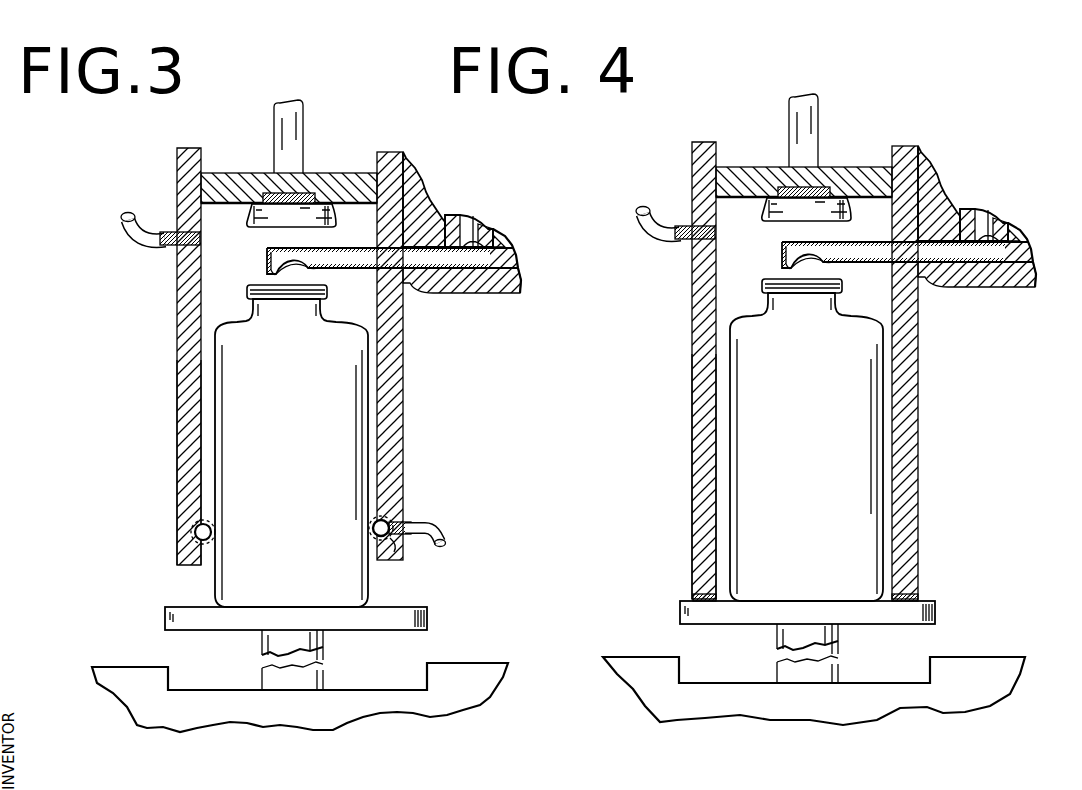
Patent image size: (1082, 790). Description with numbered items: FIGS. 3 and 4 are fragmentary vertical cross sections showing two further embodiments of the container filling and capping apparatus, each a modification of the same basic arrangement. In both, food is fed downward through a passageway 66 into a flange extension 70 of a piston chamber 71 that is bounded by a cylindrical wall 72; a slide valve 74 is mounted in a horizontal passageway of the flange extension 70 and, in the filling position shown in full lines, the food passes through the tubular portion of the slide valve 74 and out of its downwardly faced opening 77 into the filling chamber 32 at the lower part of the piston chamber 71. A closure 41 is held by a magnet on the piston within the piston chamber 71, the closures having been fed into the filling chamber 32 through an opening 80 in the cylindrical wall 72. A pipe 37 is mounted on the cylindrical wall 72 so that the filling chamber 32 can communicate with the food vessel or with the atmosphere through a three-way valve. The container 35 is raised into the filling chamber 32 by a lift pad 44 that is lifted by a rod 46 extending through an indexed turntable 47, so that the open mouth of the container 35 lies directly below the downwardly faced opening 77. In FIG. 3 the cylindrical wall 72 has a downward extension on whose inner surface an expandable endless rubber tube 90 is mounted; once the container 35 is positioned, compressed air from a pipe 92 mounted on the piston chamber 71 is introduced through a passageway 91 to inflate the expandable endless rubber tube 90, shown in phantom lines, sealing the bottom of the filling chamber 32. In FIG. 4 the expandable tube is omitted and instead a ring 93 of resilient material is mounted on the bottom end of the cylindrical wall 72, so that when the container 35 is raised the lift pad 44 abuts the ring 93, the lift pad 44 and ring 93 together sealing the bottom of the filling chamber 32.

In FIG. 3, the filling chamber 32 is at (291, 425).
In FIG. 4, the filling chamber 32 is at (806, 422).
In FIG. 3, the container 35 is at (403, 408).
In FIG. 4, the container 35 is at (931, 372).
In FIG. 3, the pipe 37 is at (128, 226).
In FIG. 4, the pipe 37 is at (669, 242).
In FIG. 3, the closure 41 is at (333, 210).
In FIG. 4, the closure 41 is at (824, 206).
In FIG. 3, the lift pad 44 is at (427, 613).
In FIG. 4, the lift pad 44 is at (833, 609).
In FIG. 3, the rod 46 is at (326, 645).
In FIG. 4, the rod 46 is at (826, 654).
In FIG. 3, the turntable 47 is at (452, 663).
In FIG. 4, the turntable 47 is at (814, 677).
In FIG. 3, the passageway 66 is at (464, 232).
In FIG. 4, the passageway 66 is at (997, 219).
In FIG. 3, the flange extension 70 is at (410, 196).
In FIG. 4, the flange extension 70 is at (876, 216).
In FIG. 3, the piston chamber 71 is at (176, 172).
In FIG. 4, the piston chamber 71 is at (685, 366).
In FIG. 3, the cylindrical wall 72 is at (177, 421).
In FIG. 4, the cylindrical wall 72 is at (690, 476).
In FIG. 3, the slide valve 74 is at (520, 253).
In FIG. 4, the slide valve 74 is at (929, 255).
In FIG. 3, the downwardly faced opening 77 is at (310, 272).
In FIG. 4, the downwardly faced opening 77 is at (821, 277).
In FIG. 3, the opening 80 is at (303, 116).
In FIG. 4, the opening 80 is at (821, 130).
In FIG. 3, the expandable endless rubber tube 90 is at (393, 520).
In FIG. 3, the passageway 91 is at (396, 546).
In FIG. 3, the pipe 92 is at (432, 528).
In FIG. 4, the ring 93 is at (833, 584).